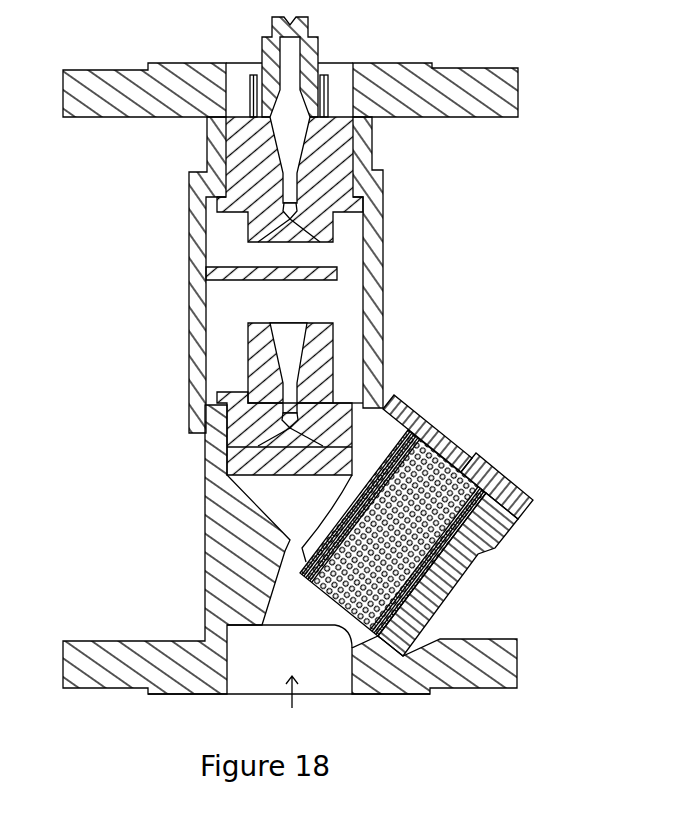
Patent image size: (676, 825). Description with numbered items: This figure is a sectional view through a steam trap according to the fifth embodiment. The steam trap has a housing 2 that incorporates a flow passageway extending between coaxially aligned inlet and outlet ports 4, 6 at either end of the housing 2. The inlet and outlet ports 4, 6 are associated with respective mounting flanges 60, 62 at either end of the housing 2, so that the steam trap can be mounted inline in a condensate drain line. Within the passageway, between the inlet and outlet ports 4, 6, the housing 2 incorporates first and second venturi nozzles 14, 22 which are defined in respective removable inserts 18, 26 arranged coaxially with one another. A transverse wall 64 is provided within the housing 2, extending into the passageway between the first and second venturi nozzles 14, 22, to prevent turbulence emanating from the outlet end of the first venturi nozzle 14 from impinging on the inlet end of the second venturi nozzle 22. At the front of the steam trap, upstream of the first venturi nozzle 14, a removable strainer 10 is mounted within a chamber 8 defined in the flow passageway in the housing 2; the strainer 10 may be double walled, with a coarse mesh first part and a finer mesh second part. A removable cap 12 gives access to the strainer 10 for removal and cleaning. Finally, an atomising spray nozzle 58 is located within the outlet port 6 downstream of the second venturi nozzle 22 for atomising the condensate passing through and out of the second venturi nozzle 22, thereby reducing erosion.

The housing 2 is at (205, 542).
The inlet port 4 is at (330, 692).
The outlet port 6 is at (343, 73).
The chamber 8 is at (427, 595).
The strainer 10 is at (487, 462).
The removable cap 12 is at (430, 427).
The first venturi nozzle 14 is at (330, 353).
The removable insert 18 is at (350, 400).
The second venturi nozzle 22 is at (333, 178).
The removable insert 26 is at (242, 165).
The atomising spray nozzle 58 is at (263, 53).
The mounting flange 60 is at (493, 678).
The mounting flange 62 is at (502, 78).
The transverse wall 64 is at (252, 277).